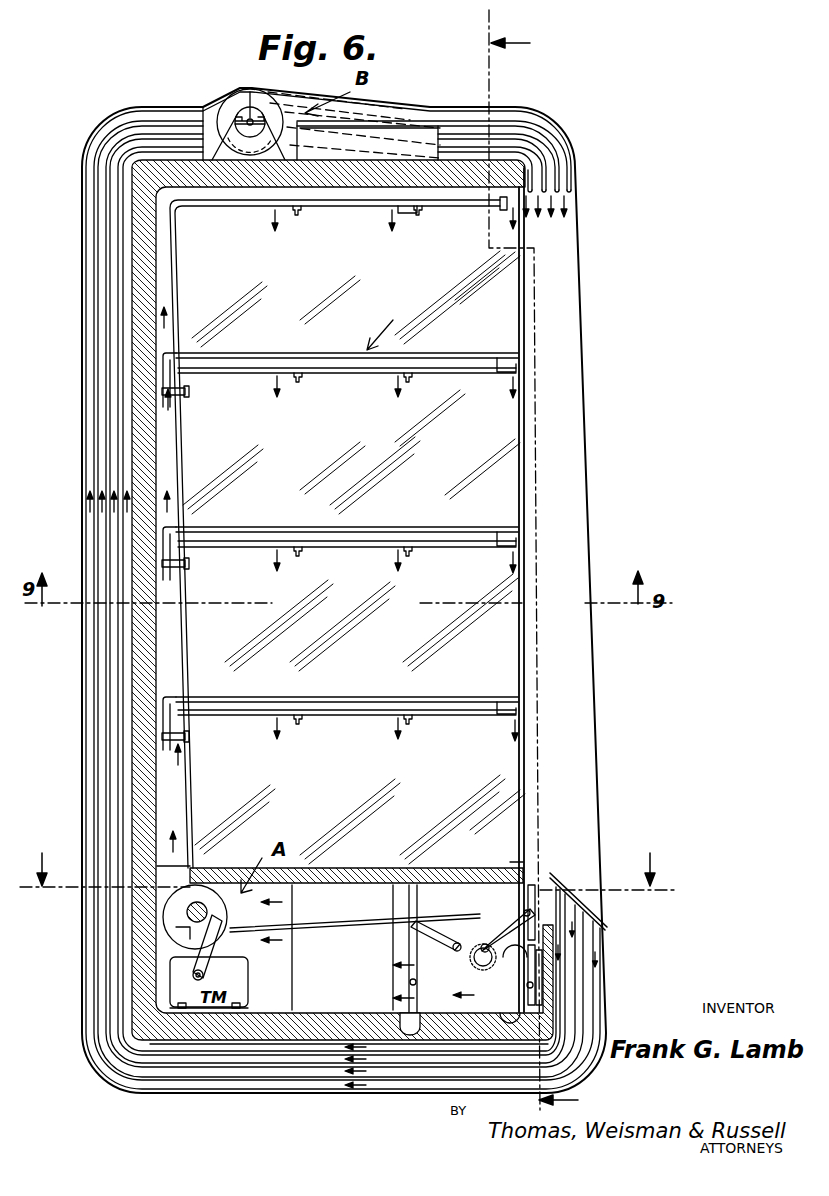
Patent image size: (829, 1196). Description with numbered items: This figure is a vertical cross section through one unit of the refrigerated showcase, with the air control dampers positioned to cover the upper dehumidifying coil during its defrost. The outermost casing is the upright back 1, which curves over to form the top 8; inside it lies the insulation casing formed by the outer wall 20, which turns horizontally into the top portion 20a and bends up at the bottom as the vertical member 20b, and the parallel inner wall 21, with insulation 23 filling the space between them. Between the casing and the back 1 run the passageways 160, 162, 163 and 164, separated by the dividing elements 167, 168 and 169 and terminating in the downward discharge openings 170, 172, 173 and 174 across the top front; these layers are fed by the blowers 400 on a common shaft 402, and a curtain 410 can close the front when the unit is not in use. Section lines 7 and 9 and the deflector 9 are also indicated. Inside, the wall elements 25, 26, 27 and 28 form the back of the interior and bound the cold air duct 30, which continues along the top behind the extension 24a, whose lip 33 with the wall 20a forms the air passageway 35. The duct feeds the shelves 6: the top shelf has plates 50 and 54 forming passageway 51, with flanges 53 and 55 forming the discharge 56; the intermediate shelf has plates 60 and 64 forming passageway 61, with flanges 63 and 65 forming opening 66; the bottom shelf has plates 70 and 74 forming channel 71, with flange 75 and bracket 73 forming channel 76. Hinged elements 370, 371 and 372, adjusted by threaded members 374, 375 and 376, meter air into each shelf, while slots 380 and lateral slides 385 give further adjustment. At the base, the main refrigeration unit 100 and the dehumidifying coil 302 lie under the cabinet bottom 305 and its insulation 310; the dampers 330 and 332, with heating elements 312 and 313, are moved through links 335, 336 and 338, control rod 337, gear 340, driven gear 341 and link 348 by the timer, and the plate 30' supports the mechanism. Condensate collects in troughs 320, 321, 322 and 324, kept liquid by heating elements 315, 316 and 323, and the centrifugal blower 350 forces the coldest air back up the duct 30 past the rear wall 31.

The upright back 1 is at (80, 440).
The shelves 6 is at (384, 330).
The section line 7- 7 is at (533, 561).
The top 8 is at (347, 861).
The air deflector 9 is at (605, 912).
The outer insulation wall 20 is at (130, 243).
The top portion of outer wall 20a is at (342, 165).
The upwardly bent lower portion of outer wall 20b is at (553, 985).
The inner insulation wall 21 is at (181, 466).
The insulation 23 is at (187, 659).
The right-angled extension of inner duct wall 24a is at (190, 208).
The spaced wall element 25 is at (178, 283).
The spaced wall element 26 is at (180, 439).
The spaced wall element 27 is at (186, 629).
The spaced wall element 28 is at (188, 816).
The cold air duct 30 is at (315, 352).
The plate 30' is at (492, 912).
The rear inner wall 31 is at (528, 228).
The lip 33 is at (505, 207).
The air passageway 35 is at (518, 205).
The upper shelf plate 50 is at (271, 353).
The shelf passageway 51 is at (446, 374).
The downwardly extending flange 53 is at (521, 361).
The lower shelf plate 54 is at (336, 373).
The upwardly extending flange 55 is at (508, 350).
The discharge passageway 56 is at (521, 373).
The upper plate of intermediate shelf 60 is at (370, 527).
The cold air passageway 61 is at (251, 548).
The flange 63 is at (522, 537).
The lower plate of intermediate shelf 64 is at (336, 548).
The flange 65 is at (507, 527).
The discharge opening 66 is at (515, 553).
The upper plate of bottom shelf 70 is at (358, 697).
The cold air channel 71 is at (262, 717).
The shelf end bracket 73 is at (524, 709).
The lower plate of bottom shelf 74 is at (336, 716).
The flange 75 is at (500, 703).
The discharge channel 76 is at (511, 720).
The main refrigeration unit 100 is at (356, 917).
The passageway 160 is at (86, 400).
The passageway 162 is at (112, 640).
The passageway 163 is at (118, 700).
The passageway 164 is at (126, 768).
The dividing element 167 is at (197, 1053).
The dividing element 168 is at (260, 1062).
The dividing element 169 is at (315, 1078).
The discharge opening 170 is at (566, 182).
The discharge opening 172 is at (552, 182).
The discharge opening 173 is at (540, 184).
The discharge opening 174 is at (530, 186).
The dehumidifying coil 302 is at (496, 995).
The cabinet bottom 305 is at (361, 869).
The insulation 310 is at (311, 869).
The heating element 312 is at (531, 880).
The heating element 313 is at (408, 903).
The heating element 315 is at (300, 1008).
The heating means 316 is at (462, 1010).
The drain trough 320 is at (405, 1035).
The drain trough 321 is at (480, 1040).
The drain trough 322 is at (553, 1030).
The heating element 323 is at (556, 945).
The drain trough 324 is at (563, 962).
The adjustable damper 330 is at (426, 869).
The adjustable damper 332 is at (546, 885).
The link 335 is at (228, 950).
The link 336 is at (310, 925).
The control rod 337 is at (500, 913).
The link 338 is at (410, 935).
The cog wheel 340 is at (406, 968).
The driven gear 341 is at (477, 961).
The link 348 is at (516, 885).
The centrifugal blower 350 is at (209, 920).
The hinged element 370 is at (168, 356).
The hinged element 371 is at (168, 531).
The hinged element 372 is at (170, 697).
The threaded control member 374 is at (189, 392).
The threaded control member 375 is at (190, 571).
The threaded control member 376 is at (190, 745).
The slots 380 is at (350, 373).
The lateral slides 385 is at (297, 216).
The blowers 400 is at (238, 94).
The common shaft 402 is at (252, 102).
The curtain 410 is at (583, 365).